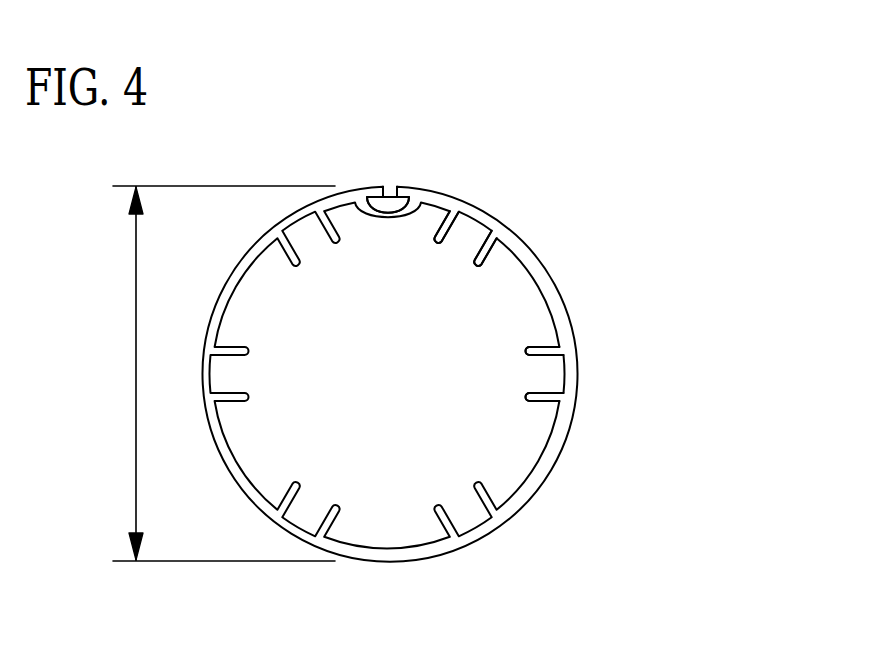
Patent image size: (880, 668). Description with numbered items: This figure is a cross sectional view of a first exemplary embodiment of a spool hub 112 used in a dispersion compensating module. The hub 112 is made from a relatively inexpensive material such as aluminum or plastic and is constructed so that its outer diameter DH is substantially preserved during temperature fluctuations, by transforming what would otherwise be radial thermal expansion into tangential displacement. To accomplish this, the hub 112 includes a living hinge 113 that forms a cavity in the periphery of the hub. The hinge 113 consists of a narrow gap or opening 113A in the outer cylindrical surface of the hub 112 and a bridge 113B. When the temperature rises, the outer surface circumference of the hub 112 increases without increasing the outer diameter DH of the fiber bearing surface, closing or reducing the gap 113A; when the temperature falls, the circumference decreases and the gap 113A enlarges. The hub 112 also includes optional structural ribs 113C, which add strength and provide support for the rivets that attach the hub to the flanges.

The hub 112 is at (659, 79).
The living hinge 113 is at (402, 187).
The gap 113A is at (388, 186).
The bridge 113B is at (387, 218).
The structural ribs 113C is at (543, 393).
The outer diameter DH is at (136, 358).